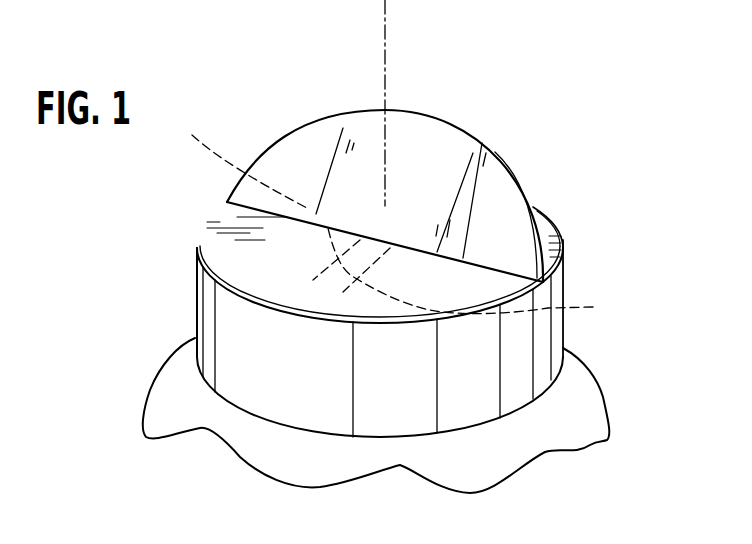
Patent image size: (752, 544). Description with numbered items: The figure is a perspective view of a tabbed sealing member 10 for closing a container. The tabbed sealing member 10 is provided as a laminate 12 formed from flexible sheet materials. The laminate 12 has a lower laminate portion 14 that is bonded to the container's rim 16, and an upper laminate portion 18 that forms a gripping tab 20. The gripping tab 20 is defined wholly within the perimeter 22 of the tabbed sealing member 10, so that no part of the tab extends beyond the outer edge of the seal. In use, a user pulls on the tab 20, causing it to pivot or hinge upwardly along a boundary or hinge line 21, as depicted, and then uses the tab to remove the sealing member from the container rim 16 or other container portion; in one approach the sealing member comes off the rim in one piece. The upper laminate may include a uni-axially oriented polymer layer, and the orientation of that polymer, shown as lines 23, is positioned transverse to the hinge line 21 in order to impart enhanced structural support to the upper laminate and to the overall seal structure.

The tabbed sealing member 10 is at (398, 56).
The laminate 12 is at (305, 262).
The lower laminate portion 14 is at (562, 230).
The container rim 16 is at (283, 325).
The upper laminate portion 18 is at (206, 262).
The gripping tab 20 is at (360, 110).
The hinge line 21 is at (478, 182).
The perimeter 22 is at (525, 298).
The orientation lines 23 is at (394, 216).